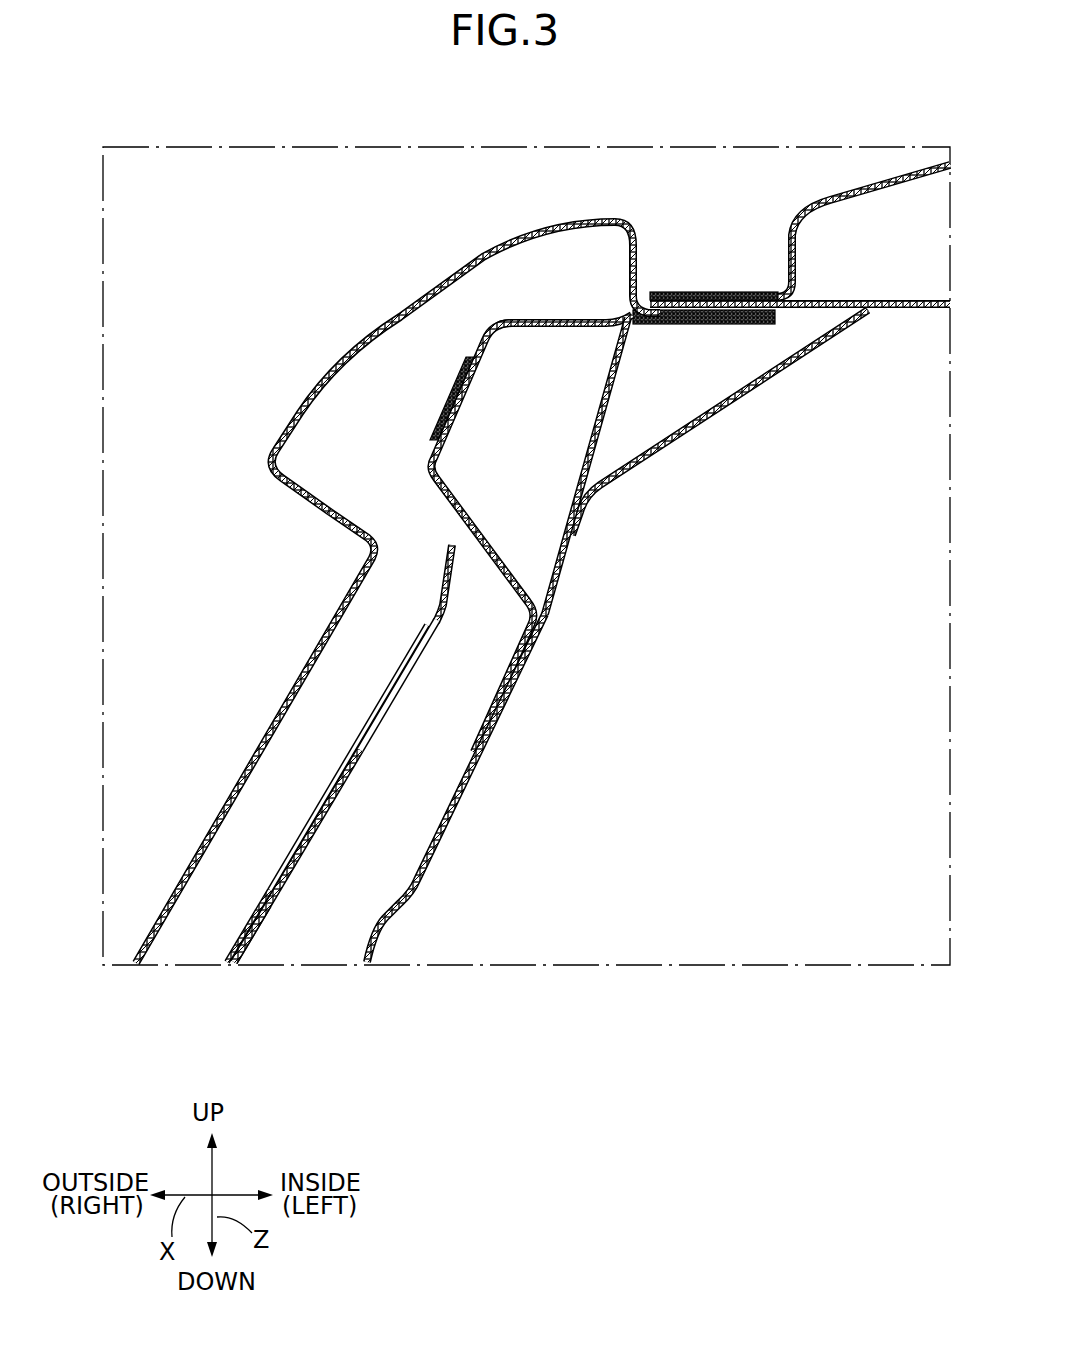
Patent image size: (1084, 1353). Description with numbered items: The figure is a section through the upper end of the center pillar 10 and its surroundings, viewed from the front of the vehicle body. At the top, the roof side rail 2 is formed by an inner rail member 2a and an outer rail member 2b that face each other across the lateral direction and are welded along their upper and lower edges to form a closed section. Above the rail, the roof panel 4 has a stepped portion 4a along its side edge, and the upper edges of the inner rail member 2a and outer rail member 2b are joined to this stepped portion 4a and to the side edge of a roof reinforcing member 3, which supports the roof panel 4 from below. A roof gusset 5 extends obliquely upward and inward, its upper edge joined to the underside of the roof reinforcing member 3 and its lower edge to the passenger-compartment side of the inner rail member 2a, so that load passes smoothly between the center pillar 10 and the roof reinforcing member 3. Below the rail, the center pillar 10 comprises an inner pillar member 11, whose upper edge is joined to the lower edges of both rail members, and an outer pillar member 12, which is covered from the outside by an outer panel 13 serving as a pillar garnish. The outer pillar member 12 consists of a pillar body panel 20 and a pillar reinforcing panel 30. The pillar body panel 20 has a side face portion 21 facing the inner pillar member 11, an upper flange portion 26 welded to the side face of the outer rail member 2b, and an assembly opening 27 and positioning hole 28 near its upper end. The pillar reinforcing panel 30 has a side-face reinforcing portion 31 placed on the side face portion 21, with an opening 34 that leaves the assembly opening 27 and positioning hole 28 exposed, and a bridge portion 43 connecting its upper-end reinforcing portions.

The roof side rail 2 is at (508, 314).
The inner rail member 2a is at (582, 462).
The outer rail member 2b is at (480, 377).
The roof reinforcing member 3 is at (845, 298).
The roof panel 4 is at (877, 185).
The stepped portion 4a is at (700, 293).
The roof gusset 5 is at (713, 407).
The center pillar 10 is at (560, 808).
The inner pillar member 11 is at (421, 886).
The outer pillar member 12 is at (328, 817).
The outer panel 13 is at (219, 813).
The pillar body panel 20 is at (355, 797).
The side face portion 21 is at (268, 916).
The upper flange portion 26 is at (442, 422).
The assembly opening 27 is at (396, 698).
The positioning hole 28 is at (331, 810).
The pillar reinforcing panel 30 is at (304, 837).
The side-face reinforcing portion 31 is at (260, 900).
The opening 34 is at (356, 740).
The bridge portion 43 is at (441, 570).